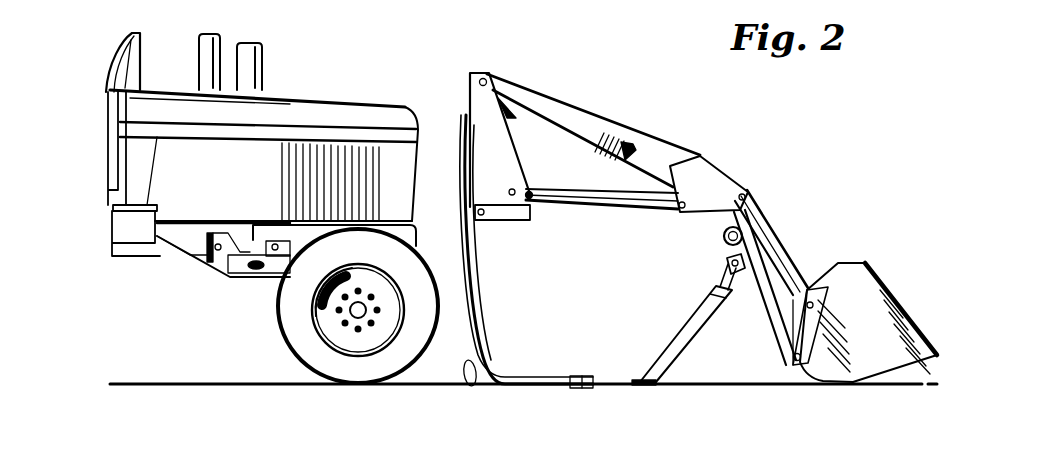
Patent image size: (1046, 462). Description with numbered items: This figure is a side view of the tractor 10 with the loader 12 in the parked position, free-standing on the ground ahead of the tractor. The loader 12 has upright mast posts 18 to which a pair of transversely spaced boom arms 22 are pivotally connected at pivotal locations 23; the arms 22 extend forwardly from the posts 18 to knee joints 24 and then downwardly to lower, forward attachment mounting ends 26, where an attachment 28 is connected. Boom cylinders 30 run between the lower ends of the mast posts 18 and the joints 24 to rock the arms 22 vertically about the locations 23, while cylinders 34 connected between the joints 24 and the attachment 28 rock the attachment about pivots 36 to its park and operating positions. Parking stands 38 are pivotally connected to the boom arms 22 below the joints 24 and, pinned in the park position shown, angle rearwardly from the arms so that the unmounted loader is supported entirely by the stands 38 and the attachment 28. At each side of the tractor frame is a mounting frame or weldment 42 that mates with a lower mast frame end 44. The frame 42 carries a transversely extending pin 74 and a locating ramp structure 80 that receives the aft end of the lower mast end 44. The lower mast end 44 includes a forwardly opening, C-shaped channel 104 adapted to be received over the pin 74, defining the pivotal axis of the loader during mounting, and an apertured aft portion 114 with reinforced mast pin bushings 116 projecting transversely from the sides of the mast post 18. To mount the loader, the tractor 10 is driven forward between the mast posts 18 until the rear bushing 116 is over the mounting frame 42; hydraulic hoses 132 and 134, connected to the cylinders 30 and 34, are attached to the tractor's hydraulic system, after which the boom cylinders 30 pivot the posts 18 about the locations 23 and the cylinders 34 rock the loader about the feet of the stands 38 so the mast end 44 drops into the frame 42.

The tractor 10 is at (345, 58).
The loader 12 is at (770, 150).
The mast posts 18 is at (470, 100).
The boom arms 22 is at (582, 118).
The pivotal locations 23 is at (482, 73).
The knee joints 24 is at (700, 158).
The attachment mounting ends 26 is at (778, 327).
The attachment 28 is at (860, 285).
The boom cylinders 30 is at (580, 188).
The cylinders 34 is at (770, 215).
The pivots 36 is at (797, 366).
The parking stands 38 is at (685, 322).
The mounting frame 42 is at (235, 292).
The lower mast frame end 44 is at (538, 230).
The pin 74 is at (268, 243).
The locating ramp structure 80 is at (195, 236).
The channel 104 is at (535, 208).
The apertured aft portion 114 is at (488, 225).
The mast pin bushings 116 is at (478, 200).
The hydraulic hose 132 is at (498, 372).
The hydraulic hose 134 is at (470, 388).